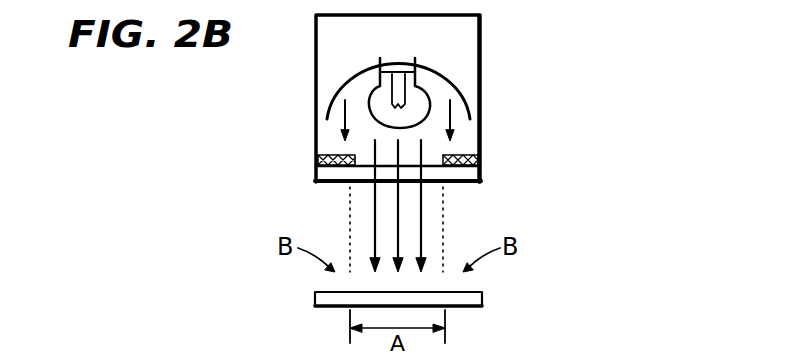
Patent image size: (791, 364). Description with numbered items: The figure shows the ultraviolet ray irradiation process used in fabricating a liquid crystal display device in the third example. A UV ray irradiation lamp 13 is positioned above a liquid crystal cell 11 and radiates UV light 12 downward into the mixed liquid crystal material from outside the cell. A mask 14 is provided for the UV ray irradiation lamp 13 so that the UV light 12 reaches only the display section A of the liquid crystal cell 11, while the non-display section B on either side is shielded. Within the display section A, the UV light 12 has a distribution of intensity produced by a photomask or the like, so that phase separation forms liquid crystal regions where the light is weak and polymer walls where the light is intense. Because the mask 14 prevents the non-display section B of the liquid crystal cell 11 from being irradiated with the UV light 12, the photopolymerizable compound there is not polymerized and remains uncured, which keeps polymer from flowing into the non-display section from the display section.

The liquid crystal cell 11 is at (482, 302).
The UV light 12 is at (423, 220).
The UV ray irradiation lamp 13 is at (481, 52).
The mask 14 is at (318, 158).